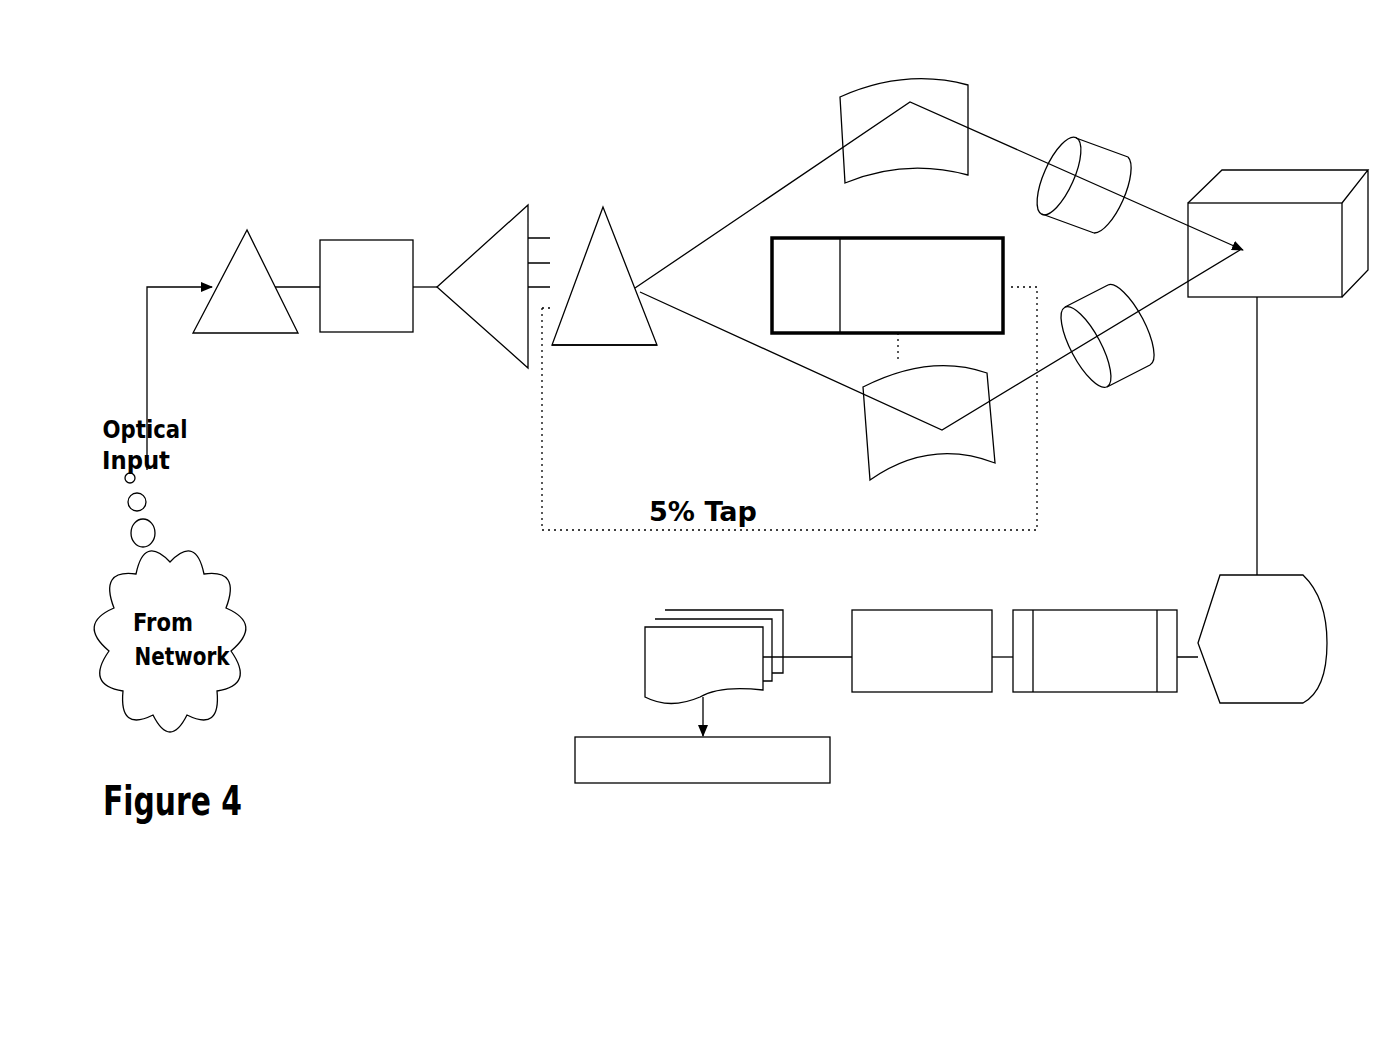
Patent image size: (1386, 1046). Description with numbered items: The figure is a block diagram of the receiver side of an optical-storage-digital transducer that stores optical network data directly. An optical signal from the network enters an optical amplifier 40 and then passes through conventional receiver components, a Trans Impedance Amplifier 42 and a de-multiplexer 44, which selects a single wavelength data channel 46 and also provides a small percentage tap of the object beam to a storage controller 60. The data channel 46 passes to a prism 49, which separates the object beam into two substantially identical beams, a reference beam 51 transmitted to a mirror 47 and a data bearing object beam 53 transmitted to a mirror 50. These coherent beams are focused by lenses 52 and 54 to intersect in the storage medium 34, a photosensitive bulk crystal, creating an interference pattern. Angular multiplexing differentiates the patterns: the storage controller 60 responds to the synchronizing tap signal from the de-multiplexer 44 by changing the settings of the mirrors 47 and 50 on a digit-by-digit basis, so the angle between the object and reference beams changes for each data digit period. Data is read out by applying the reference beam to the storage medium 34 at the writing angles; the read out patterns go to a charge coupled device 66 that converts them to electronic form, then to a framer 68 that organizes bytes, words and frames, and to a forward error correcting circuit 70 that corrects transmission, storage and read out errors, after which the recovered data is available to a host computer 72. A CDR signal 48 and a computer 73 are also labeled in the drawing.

The storage medium 34 is at (1297, 168).
The optical amplifier 40 is at (247, 227).
The Trans Impedance Amplifier (TIA) 42 is at (357, 240).
The de-multiplexer 44 is at (460, 252).
The single wavelength data channel 46 is at (558, 283).
The mirror 47 is at (993, 412).
The clock and data recovery (CDR) signal 48 is at (793, 263).
The prism 49 is at (625, 345).
The mirror 50 is at (968, 88).
The reference beam 51 is at (783, 360).
The lens 52 is at (1048, 147).
The data bearing object beam 53 is at (757, 198).
The lens 54 is at (1140, 317).
The storage controller 60 is at (885, 237).
The charge coupled device (CCD) 66 is at (1260, 703).
The framer 68 is at (1085, 692).
The forward error correcting circuit (FEC) 70 is at (897, 692).
The host computer 72 is at (760, 608).
The computer 73 is at (615, 737).